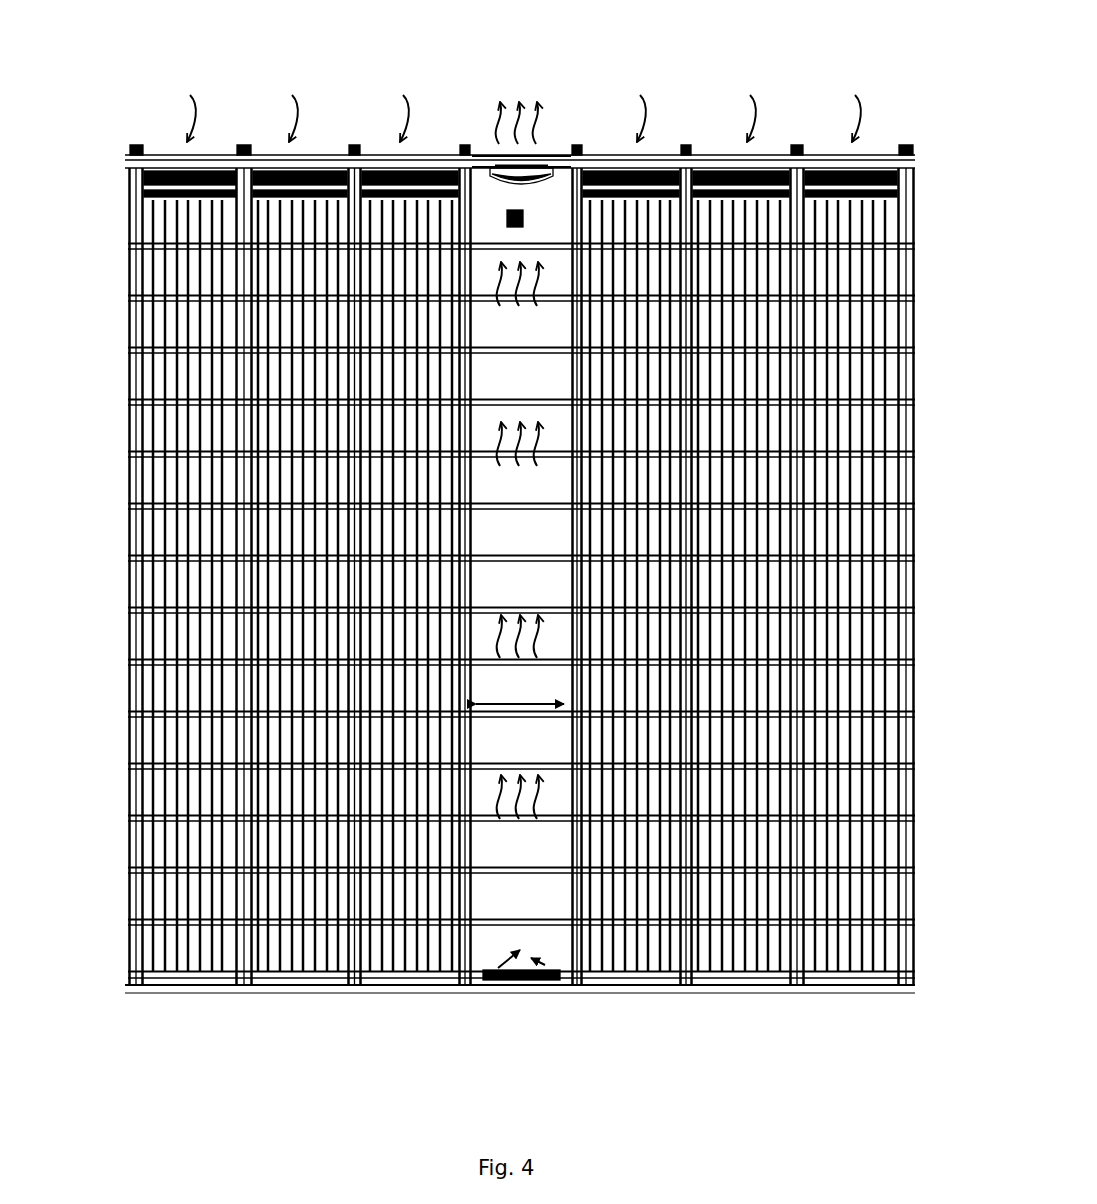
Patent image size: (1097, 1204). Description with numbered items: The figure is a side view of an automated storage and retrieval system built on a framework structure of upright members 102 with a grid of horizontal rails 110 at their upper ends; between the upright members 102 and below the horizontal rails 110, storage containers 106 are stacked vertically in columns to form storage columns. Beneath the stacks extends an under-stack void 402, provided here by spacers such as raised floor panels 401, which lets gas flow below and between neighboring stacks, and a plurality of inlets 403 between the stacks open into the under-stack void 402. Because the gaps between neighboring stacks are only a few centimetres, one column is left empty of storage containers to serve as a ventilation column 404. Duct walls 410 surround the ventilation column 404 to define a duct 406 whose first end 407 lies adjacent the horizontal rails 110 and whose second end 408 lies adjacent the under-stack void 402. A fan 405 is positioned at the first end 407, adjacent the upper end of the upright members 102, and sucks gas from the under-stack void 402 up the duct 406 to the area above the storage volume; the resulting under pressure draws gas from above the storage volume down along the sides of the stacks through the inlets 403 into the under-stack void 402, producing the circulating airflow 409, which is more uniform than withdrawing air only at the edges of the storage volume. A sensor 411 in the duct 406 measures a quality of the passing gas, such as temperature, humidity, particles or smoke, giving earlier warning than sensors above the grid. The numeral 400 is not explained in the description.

The horizontal rails 110 is at (176, 162).
The upright members 102 is at (140, 178).
The storage containers 106 is at (155, 330).
The rack 400 is at (280, 999).
The raised floor panels 401 is at (139, 625).
The under-stack void 402 is at (415, 991).
The inlets 403 is at (790, 984).
The ventilation column 404 is at (601, 150).
The fan 405 is at (492, 171).
The duct 406 is at (518, 540).
The first end 407 is at (573, 165).
The second end 408 is at (566, 978).
The airflow 409 is at (524, 518).
The duct walls 410 is at (520, 719).
The sensor 411 is at (523, 218).